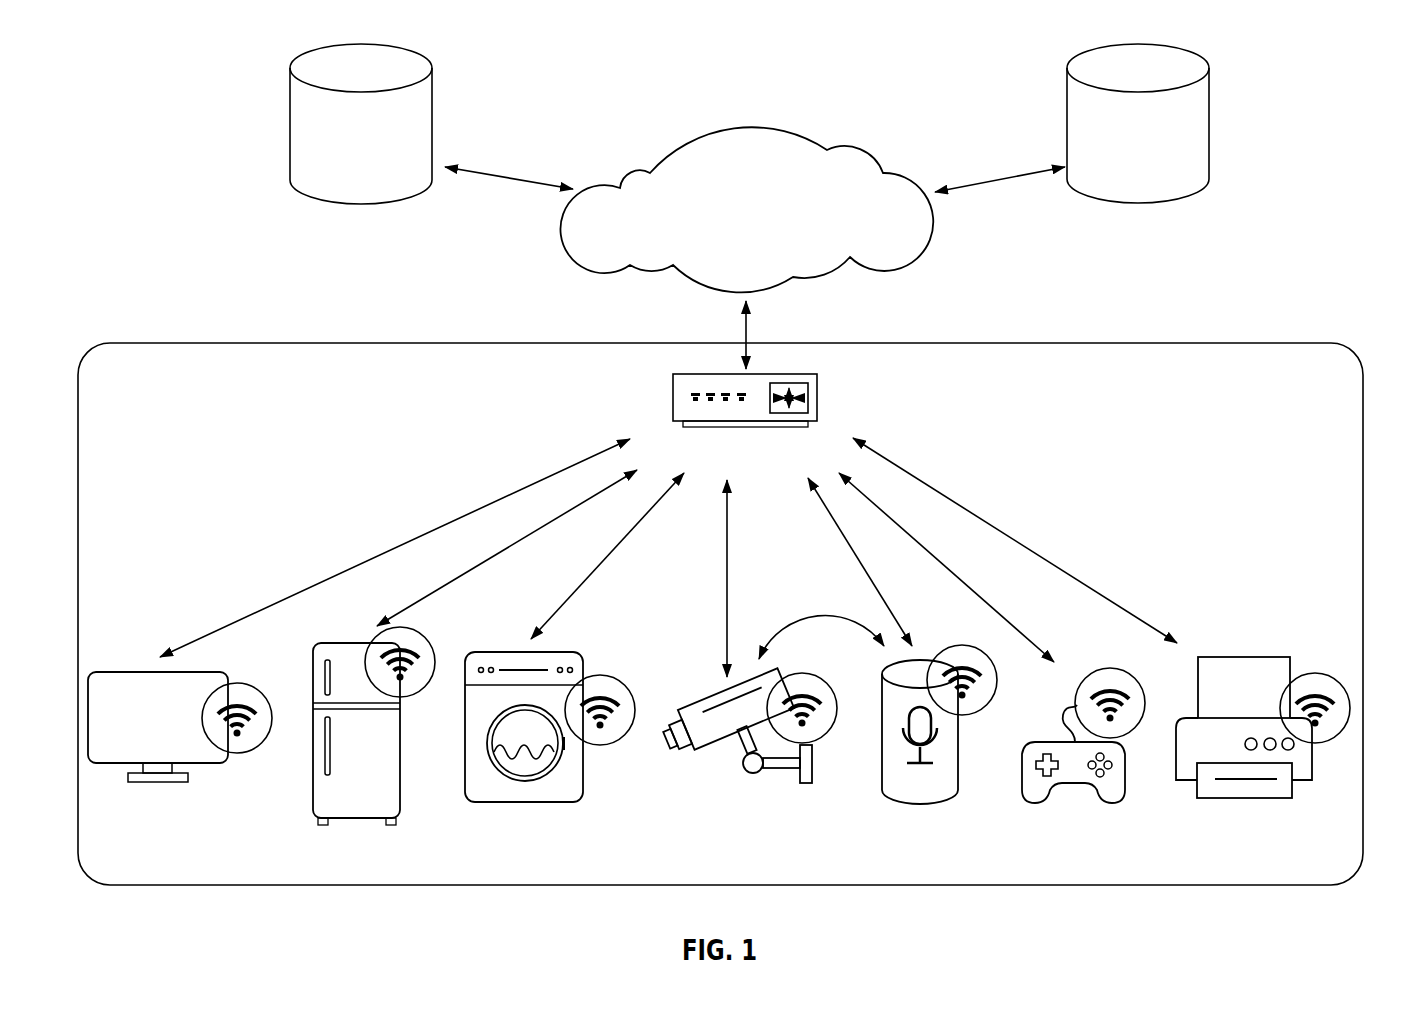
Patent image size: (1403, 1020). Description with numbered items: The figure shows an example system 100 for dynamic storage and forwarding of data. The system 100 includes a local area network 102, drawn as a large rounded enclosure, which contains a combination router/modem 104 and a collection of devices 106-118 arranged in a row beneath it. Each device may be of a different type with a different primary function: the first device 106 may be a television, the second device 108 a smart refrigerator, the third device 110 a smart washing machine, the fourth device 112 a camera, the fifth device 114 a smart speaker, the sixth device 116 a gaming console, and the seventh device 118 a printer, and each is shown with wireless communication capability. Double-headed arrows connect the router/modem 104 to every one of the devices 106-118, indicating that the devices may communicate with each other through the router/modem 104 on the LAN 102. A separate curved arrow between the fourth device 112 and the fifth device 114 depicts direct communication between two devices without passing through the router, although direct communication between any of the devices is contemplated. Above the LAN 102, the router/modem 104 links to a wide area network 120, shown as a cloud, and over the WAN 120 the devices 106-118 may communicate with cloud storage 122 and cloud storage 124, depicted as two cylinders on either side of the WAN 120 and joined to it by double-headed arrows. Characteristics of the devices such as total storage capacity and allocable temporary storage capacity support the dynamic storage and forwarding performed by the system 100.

The system 100 is at (190, 113).
The local area network 102 is at (1333, 386).
The router/modem 104 is at (841, 456).
The first device 106 is at (211, 860).
The second device 108 is at (407, 860).
The third device 110 is at (577, 860).
The fourth device 112 is at (802, 860).
The fifth device 114 is at (973, 860).
The sixth device 116 is at (1128, 860).
The seventh device 118 is at (1298, 860).
The wide area network 120 is at (907, 228).
The cloud storage 122 is at (344, 163).
The cloud storage 124 is at (1121, 170).